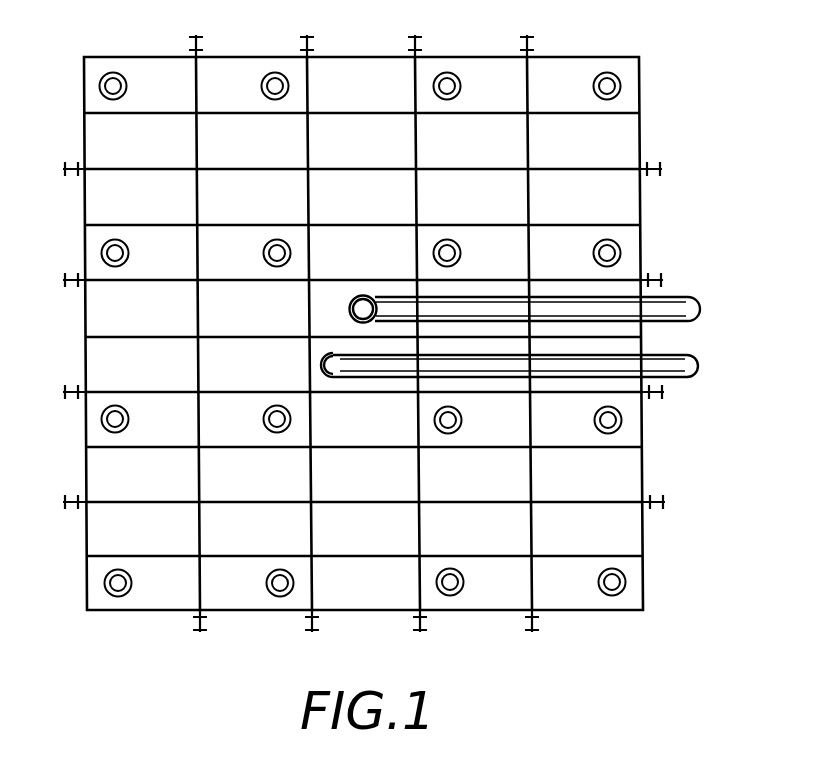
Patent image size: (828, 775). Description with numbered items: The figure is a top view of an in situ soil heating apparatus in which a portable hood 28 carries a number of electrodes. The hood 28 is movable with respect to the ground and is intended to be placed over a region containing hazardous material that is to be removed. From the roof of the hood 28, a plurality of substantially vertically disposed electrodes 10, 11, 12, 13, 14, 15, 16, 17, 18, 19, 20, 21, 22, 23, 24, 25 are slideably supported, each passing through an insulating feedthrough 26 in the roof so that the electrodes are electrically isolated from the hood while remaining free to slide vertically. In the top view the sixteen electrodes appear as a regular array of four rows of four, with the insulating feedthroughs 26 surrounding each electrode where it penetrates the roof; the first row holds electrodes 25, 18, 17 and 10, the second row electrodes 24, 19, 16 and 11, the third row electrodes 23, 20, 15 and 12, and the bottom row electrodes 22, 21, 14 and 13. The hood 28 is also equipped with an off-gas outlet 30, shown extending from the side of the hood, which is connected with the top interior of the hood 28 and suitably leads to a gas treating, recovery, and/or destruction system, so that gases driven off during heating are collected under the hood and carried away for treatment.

The electrode 10 is at (621, 86).
The electrode 11 is at (621, 253).
The electrode 12 is at (622, 420).
The electrode 13 is at (622, 592).
The electrode 14 is at (455, 596).
The electrode 15 is at (460, 425).
The electrode 16 is at (458, 259).
The electrode 17 is at (453, 73).
The electrode 18 is at (279, 72).
The electrode 19 is at (264, 254).
The electrode 20 is at (268, 428).
The electrode 21 is at (282, 596).
The electrode 22 is at (122, 596).
The electrode 23 is at (127, 423).
The electrode 24 is at (127, 257).
The electrode 25 is at (120, 72).
The insulating feedthrough 26 is at (126, 94).
The hood 28 is at (643, 523).
The off-gas outlet 30 is at (677, 330).